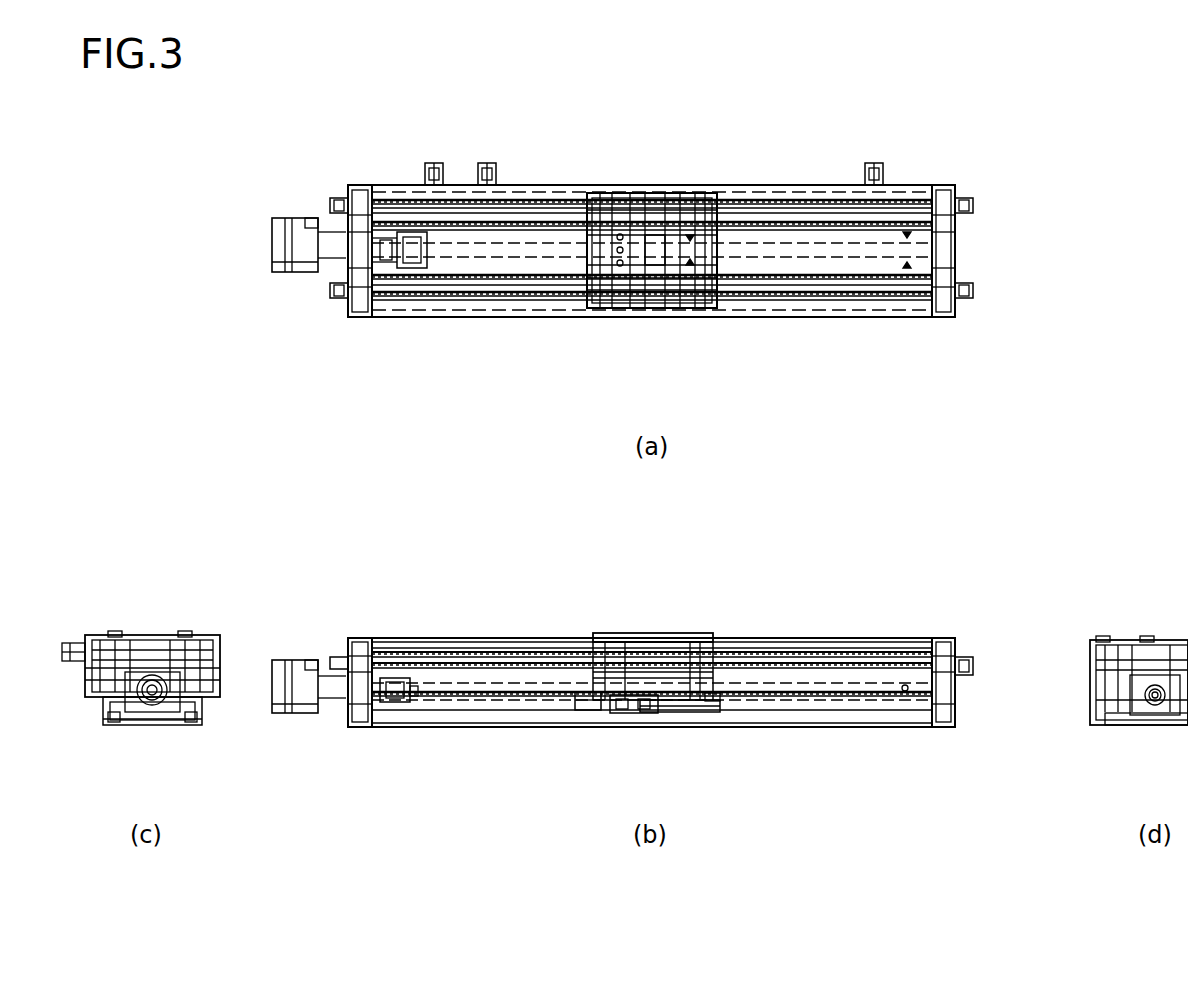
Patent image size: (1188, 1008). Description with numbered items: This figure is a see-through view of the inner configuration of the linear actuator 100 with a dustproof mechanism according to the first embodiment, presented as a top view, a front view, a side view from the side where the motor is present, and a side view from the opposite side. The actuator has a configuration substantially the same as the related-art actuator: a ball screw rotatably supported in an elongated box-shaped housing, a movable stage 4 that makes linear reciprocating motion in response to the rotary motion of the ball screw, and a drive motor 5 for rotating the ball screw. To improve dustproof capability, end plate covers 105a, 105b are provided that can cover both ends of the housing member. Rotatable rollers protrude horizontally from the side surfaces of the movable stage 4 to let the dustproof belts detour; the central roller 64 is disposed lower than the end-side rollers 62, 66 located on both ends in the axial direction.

The linear actuator with a dustproof mechanism 100 is at (918, 138).
The drive motor 5 is at (275, 272).
The end plate cover 105b is at (357, 320).
The end plate cover 105a is at (942, 320).
The movable stage 4 is at (622, 312).
The roller 62 is at (732, 727).
The roller 64 is at (627, 727).
The roller 66 is at (570, 727).